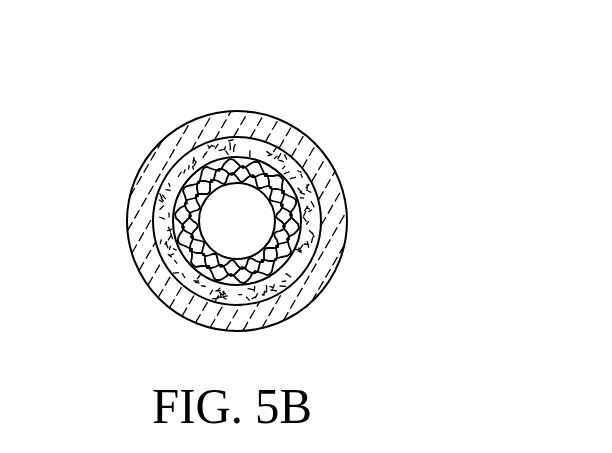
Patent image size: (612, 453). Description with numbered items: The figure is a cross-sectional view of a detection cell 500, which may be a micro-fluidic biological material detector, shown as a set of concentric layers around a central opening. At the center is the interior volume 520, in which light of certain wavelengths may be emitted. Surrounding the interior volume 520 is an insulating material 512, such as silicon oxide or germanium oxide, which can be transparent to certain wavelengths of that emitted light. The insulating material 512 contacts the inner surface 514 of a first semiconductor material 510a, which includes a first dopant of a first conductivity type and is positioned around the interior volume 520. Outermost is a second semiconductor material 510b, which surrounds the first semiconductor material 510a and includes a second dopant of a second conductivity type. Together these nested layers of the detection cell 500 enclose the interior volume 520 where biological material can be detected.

The detection cell 500 is at (246, 188).
The first semiconductor material 510a is at (310, 232).
The second semiconductor material 510b is at (318, 272).
The insulating material 512 is at (182, 228).
The inner surface 514 is at (183, 178).
The interior volume 520 is at (252, 210).